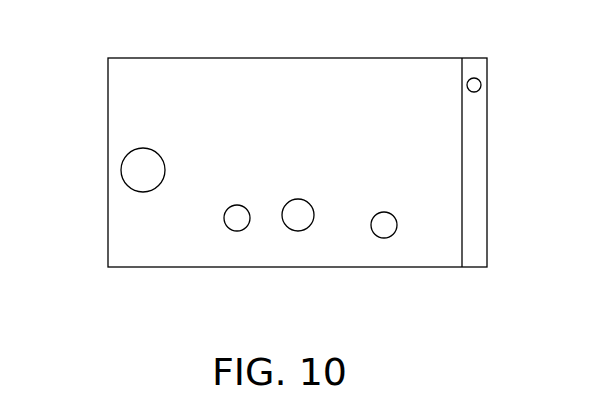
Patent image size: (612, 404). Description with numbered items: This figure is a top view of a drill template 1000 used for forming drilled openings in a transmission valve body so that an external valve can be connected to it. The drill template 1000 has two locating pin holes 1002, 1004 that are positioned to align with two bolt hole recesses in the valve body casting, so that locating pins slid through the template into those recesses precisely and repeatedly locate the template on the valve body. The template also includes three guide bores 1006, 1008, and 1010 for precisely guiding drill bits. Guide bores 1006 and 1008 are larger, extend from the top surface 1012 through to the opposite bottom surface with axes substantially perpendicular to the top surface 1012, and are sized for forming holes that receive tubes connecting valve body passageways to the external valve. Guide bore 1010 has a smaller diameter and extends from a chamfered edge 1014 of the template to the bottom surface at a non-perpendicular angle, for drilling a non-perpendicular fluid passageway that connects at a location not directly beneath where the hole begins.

The drill template 1000 is at (381, 75).
The locating pin hole 1002 is at (128, 173).
The locating pin hole 1004 is at (298, 222).
The guide bore 1006 is at (237, 231).
The guide bore 1008 is at (380, 238).
The guide bore 1010 is at (481, 81).
The top surface 1012 is at (330, 145).
The chamfered edge 1014 is at (477, 192).